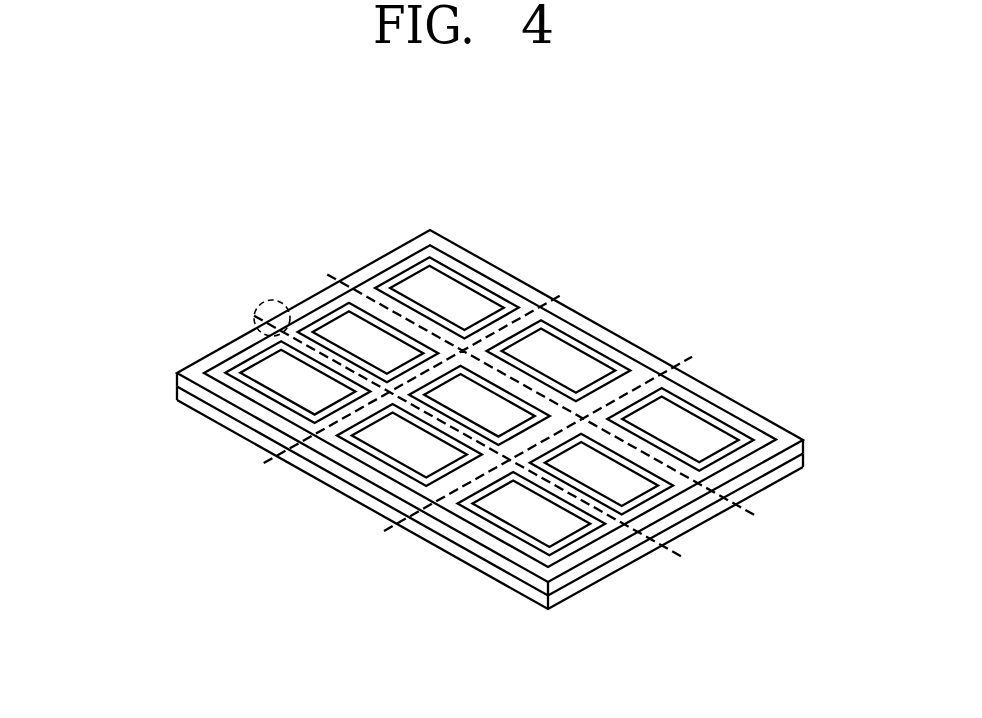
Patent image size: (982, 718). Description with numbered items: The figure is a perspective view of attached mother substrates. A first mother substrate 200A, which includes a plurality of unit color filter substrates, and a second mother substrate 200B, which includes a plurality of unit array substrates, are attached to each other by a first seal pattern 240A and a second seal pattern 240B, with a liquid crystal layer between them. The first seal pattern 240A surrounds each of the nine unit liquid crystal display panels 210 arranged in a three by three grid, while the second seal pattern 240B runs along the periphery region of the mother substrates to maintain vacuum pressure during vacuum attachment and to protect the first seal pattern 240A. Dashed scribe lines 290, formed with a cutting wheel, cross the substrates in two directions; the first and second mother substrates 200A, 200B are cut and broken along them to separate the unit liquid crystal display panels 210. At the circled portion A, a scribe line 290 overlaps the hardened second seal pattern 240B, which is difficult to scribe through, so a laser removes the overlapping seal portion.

The first mother substrate 200A is at (177, 380).
The second mother substrate 200B is at (177, 398).
The unit liquid crystal display panel 210 is at (489, 293).
The first seal pattern 240A is at (452, 268).
The second seal pattern 240B is at (702, 394).
The scribe line 290 is at (383, 540).
The portion A is at (268, 301).